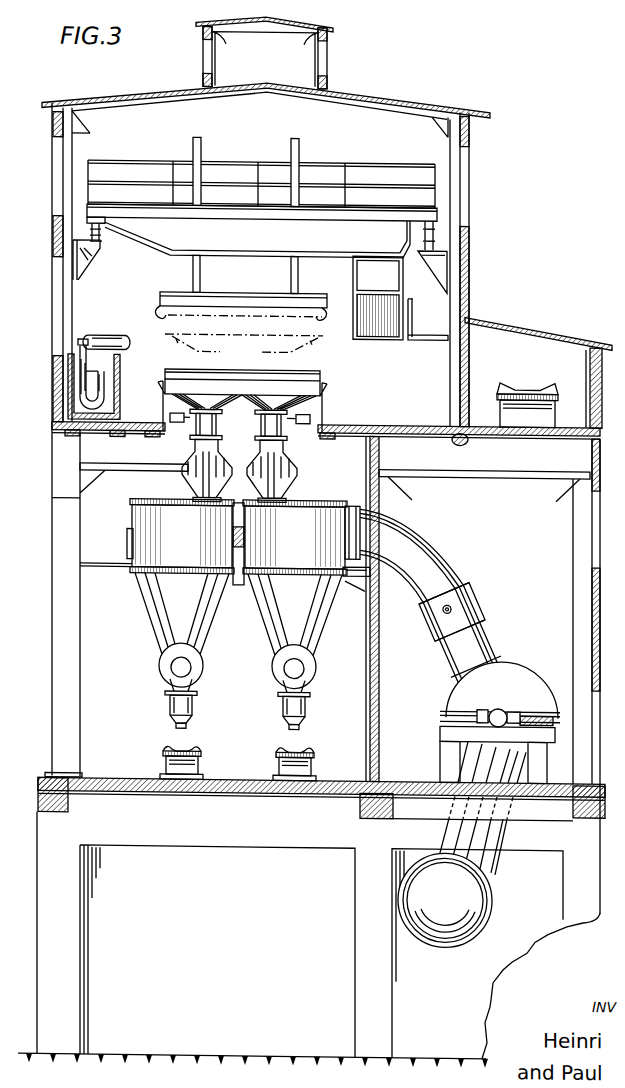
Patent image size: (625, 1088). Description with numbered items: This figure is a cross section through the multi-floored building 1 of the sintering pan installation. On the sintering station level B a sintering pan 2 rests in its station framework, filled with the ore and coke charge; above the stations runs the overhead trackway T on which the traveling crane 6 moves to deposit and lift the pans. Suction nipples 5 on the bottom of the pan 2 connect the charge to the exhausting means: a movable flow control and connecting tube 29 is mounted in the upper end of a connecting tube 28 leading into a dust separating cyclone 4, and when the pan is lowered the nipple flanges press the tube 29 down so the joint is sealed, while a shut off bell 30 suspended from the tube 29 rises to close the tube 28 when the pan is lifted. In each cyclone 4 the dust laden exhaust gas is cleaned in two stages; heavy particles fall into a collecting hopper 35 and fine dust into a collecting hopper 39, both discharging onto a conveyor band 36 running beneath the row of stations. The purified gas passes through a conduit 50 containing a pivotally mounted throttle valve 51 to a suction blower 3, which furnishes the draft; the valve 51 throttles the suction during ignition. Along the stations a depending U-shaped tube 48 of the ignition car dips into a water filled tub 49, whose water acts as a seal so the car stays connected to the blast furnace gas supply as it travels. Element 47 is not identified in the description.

The multi-floored building 1 is at (400, 105).
The sintering pan 2 is at (308, 378).
The suction blower 3 is at (520, 672).
The dust separating cyclone 4 is at (142, 616).
The suction nipple 5 is at (258, 357).
The traveling crane 6 is at (142, 242).
The connecting tube 28 is at (190, 487).
The movable flow control and connecting tube 29 is at (264, 458).
The shut off bell 30 is at (192, 452).
The collecting hopper 35 is at (168, 708).
The conveyor band 36 is at (165, 750).
The collecting hopper 39 is at (235, 710).
The pipe 47 is at (110, 337).
The U-shaped tube 48 is at (72, 354).
The water filled tub 49 is at (67, 389).
The conduit 50 is at (432, 542).
The throttle valve 51 is at (470, 601).
The sintering station level B is at (402, 432).
The overhead trackway T is at (146, 426).